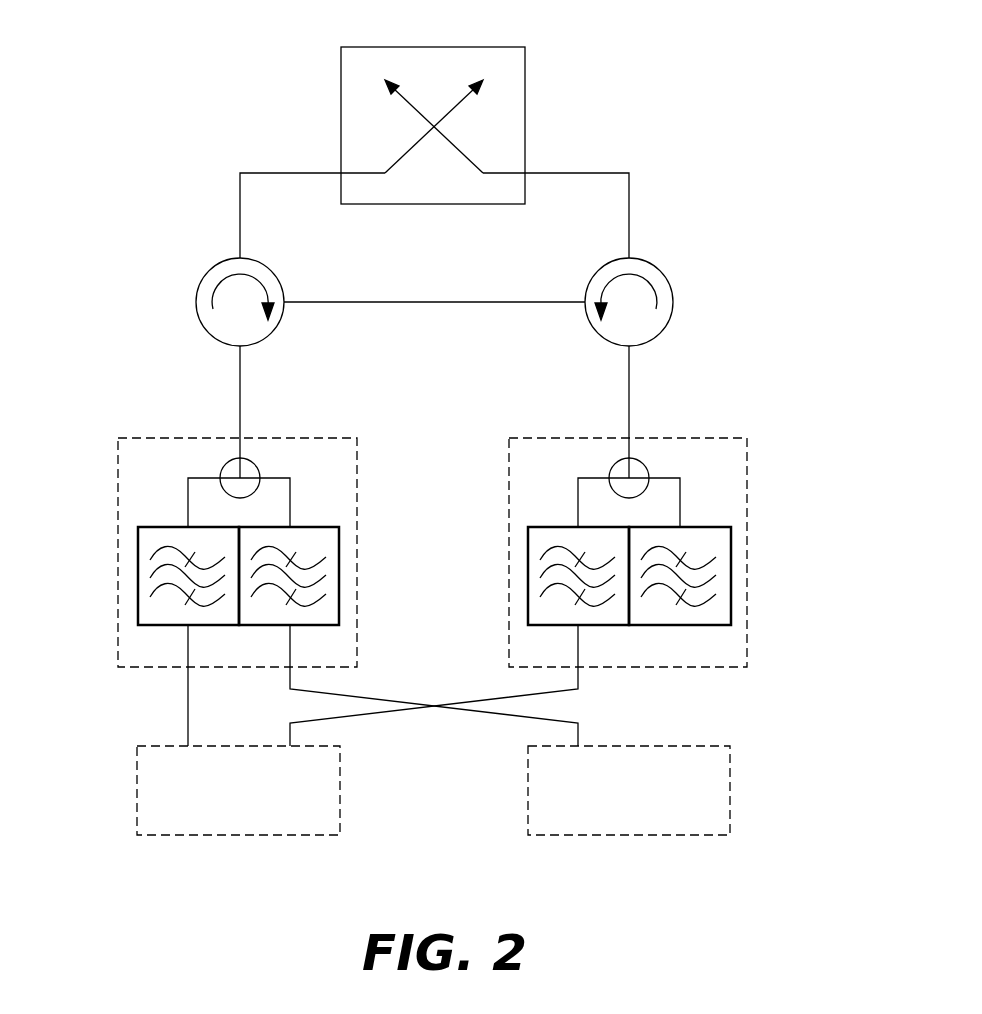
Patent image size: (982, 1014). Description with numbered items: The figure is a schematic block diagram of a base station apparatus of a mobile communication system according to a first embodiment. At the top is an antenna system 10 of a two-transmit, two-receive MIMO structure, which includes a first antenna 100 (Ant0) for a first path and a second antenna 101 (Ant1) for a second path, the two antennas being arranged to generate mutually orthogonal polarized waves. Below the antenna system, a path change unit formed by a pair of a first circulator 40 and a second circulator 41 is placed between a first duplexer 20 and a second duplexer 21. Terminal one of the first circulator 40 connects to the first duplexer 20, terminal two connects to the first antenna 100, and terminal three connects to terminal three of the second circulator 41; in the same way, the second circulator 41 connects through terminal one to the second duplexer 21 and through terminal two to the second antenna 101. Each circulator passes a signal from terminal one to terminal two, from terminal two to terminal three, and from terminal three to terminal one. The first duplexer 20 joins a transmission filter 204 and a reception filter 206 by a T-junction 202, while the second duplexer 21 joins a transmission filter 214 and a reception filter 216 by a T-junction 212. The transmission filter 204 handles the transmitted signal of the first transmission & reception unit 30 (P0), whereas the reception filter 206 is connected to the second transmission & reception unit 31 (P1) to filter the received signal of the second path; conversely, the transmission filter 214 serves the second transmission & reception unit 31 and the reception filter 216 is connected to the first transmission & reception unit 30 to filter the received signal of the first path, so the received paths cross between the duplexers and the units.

The antenna system 10 is at (433, 46).
The first antenna 100 is at (483, 79).
The second antenna 101 is at (385, 79).
The first circulator 40 is at (195, 304).
The second circulator 41 is at (674, 300).
The first duplexer 20 is at (118, 437).
The second duplexer 21 is at (747, 437).
The T-junction 202 is at (220, 470).
The T-junction 212 is at (609, 470).
The transmission filter 204 is at (137, 575).
The reception filter 206 is at (340, 575).
The reception filter 216 is at (527, 575).
The transmission filter 214 is at (732, 575).
The first transmission & reception unit 30 is at (340, 793).
The second transmission & reception unit 31 is at (730, 793).